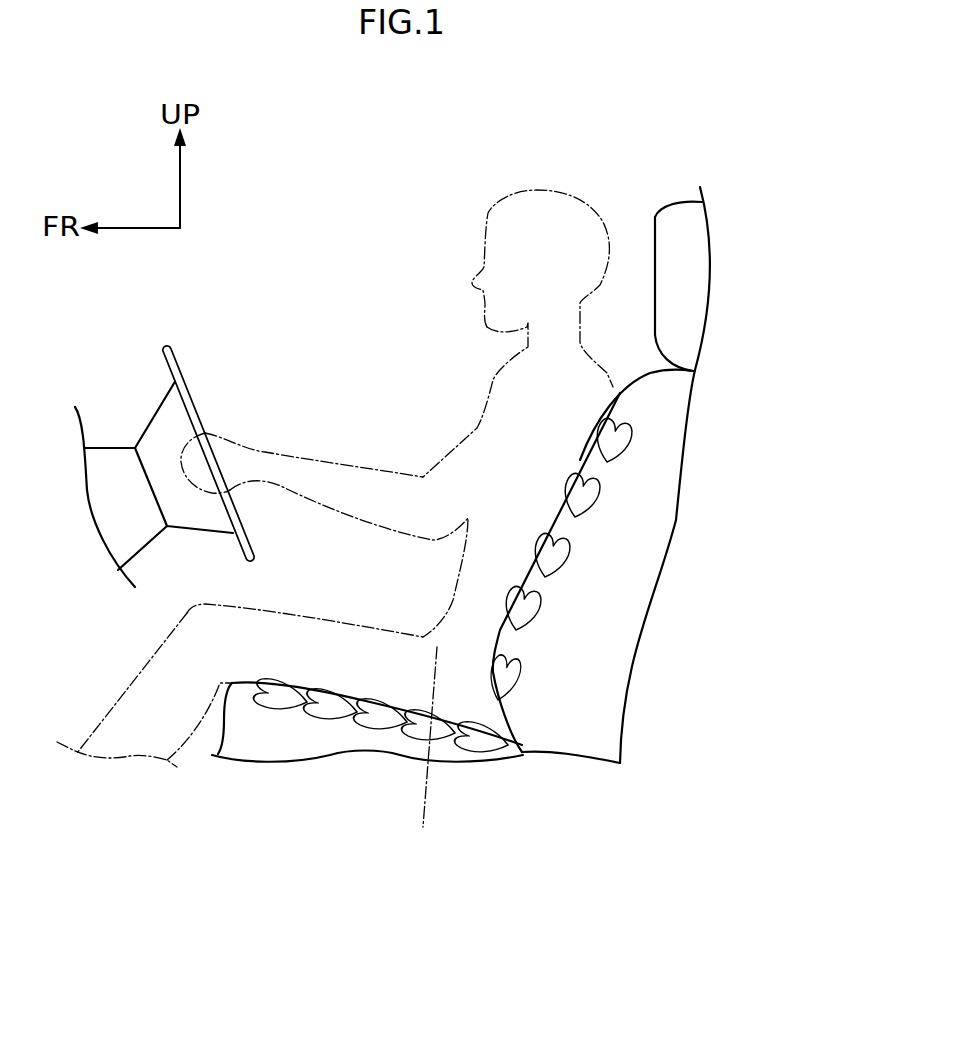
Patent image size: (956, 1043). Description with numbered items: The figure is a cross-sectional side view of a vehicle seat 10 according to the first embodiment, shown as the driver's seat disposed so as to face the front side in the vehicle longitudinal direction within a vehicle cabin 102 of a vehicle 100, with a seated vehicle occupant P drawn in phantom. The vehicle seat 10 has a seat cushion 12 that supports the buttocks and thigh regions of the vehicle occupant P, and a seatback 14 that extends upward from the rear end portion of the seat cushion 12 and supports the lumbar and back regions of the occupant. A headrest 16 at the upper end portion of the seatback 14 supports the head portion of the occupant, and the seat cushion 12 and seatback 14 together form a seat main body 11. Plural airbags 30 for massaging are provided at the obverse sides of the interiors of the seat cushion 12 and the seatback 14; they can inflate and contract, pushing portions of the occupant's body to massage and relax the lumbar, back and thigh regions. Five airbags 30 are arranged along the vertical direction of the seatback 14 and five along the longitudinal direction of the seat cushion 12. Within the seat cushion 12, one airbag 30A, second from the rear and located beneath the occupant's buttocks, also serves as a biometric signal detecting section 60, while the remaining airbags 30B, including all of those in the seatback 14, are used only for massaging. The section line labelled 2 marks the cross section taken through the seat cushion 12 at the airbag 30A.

The vehicle 100 is at (300, 200).
The vehicle cabin 102 is at (287, 261).
The vehicle occupant P is at (490, 392).
The vehicle seat 10 is at (514, 501).
The seat main body 11 is at (494, 516).
The seat cushion 12 is at (275, 740).
The seatback 14 is at (606, 643).
The headrest 16 is at (678, 233).
The airbags 30 is at (482, 638).
The airbag 30A is at (437, 745).
The airbag 30B is at (590, 505).
The biometric signal detecting section 60 is at (440, 712).
The section line 2- 2 is at (422, 808).